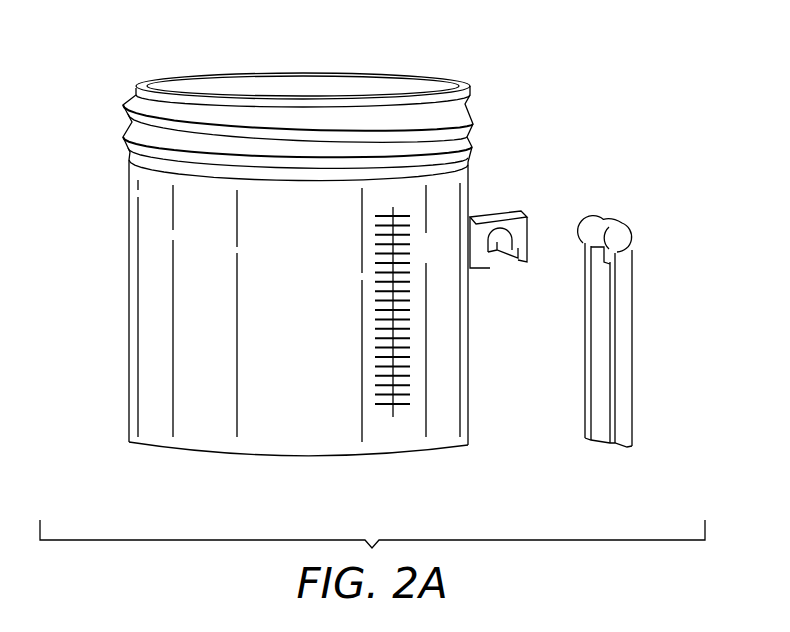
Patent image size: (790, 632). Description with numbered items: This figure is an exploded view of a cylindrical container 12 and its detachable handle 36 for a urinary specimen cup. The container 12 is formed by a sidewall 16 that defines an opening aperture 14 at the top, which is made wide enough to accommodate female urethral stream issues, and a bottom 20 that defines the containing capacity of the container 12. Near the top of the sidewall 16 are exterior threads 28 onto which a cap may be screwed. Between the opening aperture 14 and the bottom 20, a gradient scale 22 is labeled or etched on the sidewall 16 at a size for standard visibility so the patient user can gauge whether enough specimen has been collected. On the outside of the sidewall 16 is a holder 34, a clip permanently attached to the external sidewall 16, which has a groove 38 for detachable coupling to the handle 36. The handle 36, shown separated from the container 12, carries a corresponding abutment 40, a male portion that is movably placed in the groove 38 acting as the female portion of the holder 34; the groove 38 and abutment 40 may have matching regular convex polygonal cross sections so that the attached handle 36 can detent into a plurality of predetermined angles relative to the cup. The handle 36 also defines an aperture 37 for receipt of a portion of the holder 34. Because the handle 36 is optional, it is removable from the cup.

The container 12 is at (128, 332).
The opening aperture 14 is at (290, 84).
The sidewall 16 is at (470, 181).
The bottom 20 is at (440, 447).
The gradient scale 22 is at (378, 348).
The exterior threads 28 is at (120, 105).
The holder 34 is at (498, 212).
The detachable handle 36 is at (633, 343).
The aperture 37 is at (598, 257).
The groove 38 is at (493, 240).
The abutment 40 is at (624, 242).